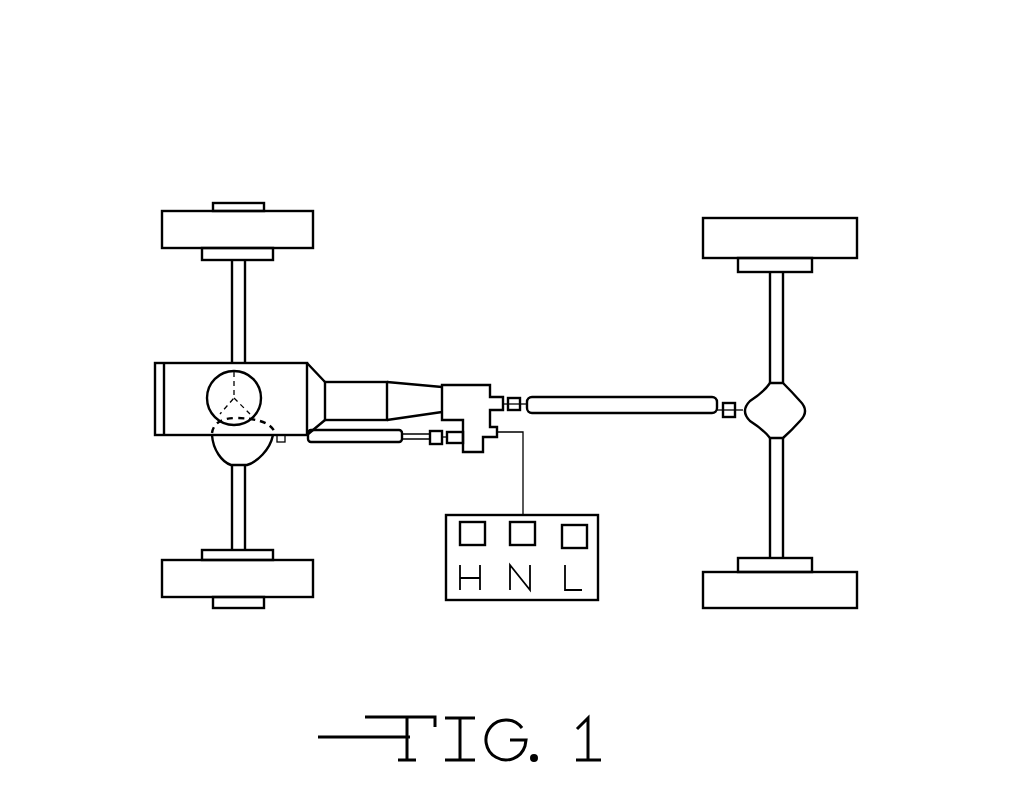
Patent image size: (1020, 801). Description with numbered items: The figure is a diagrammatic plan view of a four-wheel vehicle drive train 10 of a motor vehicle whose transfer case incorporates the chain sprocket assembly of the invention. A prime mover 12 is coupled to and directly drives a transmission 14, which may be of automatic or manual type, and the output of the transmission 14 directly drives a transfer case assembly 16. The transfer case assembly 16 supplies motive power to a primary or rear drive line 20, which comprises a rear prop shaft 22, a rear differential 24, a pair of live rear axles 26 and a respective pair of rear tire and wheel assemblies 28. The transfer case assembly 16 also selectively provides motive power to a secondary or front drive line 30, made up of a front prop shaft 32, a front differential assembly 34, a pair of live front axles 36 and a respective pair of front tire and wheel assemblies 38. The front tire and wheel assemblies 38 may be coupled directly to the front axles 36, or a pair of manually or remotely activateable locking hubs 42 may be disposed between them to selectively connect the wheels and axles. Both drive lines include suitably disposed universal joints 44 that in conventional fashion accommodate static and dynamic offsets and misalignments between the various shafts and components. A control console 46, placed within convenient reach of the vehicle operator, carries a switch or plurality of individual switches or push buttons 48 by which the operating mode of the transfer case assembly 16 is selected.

The four-wheel vehicle drive train 10 is at (478, 133).
The prime mover 12 is at (172, 382).
The transmission 14 is at (345, 395).
The transfer case assembly 16 is at (457, 385).
The primary or rear drive line 20 is at (622, 276).
The primary or rear prop shaft 22 is at (605, 397).
The primary or rear differential 24 is at (790, 412).
The primary or rear axles 26 is at (785, 335).
The primary or rear tire and wheel assemblies 28 is at (768, 205).
The secondary or front drive line 30 is at (100, 495).
The secondary or front prop shaft 32 is at (345, 443).
The secondary or front differential assembly 34 is at (232, 442).
The secondary or front axles 36 is at (232, 302).
The secondary or front tire and wheel assemblies 38 is at (152, 200).
The locking hubs 42 is at (245, 203).
The universal joints 44 is at (435, 450).
The control console 46 is at (525, 603).
The push buttons 48 is at (575, 522).